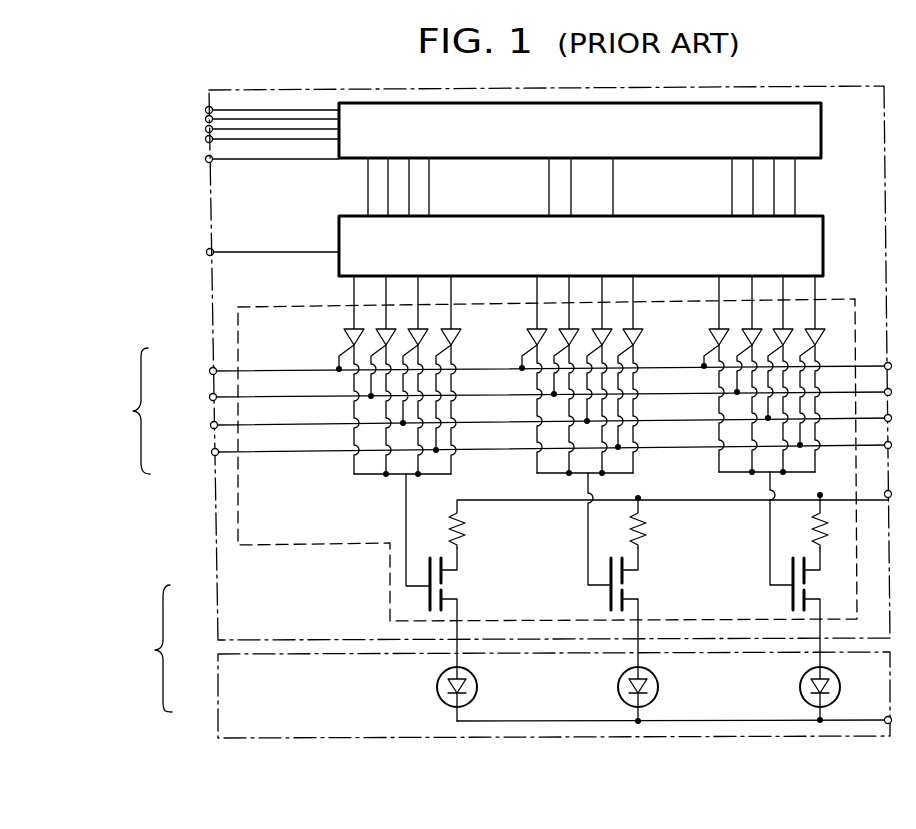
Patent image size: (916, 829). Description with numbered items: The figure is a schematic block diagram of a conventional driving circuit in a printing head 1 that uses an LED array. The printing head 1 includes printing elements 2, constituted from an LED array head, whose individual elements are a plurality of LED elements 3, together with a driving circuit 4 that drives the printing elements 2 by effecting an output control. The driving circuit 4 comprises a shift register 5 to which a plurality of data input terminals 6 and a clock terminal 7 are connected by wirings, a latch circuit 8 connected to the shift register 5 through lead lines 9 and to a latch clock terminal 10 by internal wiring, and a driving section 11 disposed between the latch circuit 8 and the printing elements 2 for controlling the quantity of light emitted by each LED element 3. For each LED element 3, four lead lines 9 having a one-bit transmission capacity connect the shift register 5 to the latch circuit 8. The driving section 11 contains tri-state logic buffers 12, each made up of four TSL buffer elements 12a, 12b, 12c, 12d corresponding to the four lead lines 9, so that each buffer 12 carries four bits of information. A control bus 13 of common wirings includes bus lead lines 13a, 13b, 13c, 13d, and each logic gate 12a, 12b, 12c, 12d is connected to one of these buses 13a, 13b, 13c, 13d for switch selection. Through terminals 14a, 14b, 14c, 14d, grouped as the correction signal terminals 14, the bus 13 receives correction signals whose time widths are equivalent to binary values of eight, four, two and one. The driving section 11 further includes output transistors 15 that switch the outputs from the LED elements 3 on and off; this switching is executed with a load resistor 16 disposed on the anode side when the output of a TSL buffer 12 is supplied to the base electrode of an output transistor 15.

The printing head 1 is at (150, 660).
The printing elements 2 is at (218, 698).
The LED element 3 is at (477, 688).
The driving circuit 4 is at (211, 577).
The shift register 5 is at (821, 128).
The data input terminals 6 is at (205, 139).
The clock terminal 7 is at (205, 159).
The latch circuit 8 is at (339, 232).
The lead lines 9 is at (613, 205).
The latch clock terminal 10 is at (206, 252).
The driving section 11 is at (238, 487).
The tri-state logic buffer 12 is at (330, 304).
The TSL buffer element 12a is at (345, 338).
The TSL buffer element 12b is at (380, 334).
The TSL buffer element 12c is at (412, 334).
The TSL buffer element 12d is at (470, 326).
The control bus 13 is at (240, 304).
The bus lead line 13a is at (290, 370).
The bus lead line 13b is at (300, 396).
The bus lead line 13c is at (305, 422).
The bus lead line 13d is at (305, 449).
The correction signal terminals 14 is at (162, 411).
The correction signal terminal 14a is at (209, 371).
The correction signal terminal 14b is at (209, 397).
The correction signal terminal 14c is at (210, 425).
The correction signal terminal 14d is at (211, 452).
The output transistor 15 is at (431, 558).
The load resistor 16 is at (466, 531).